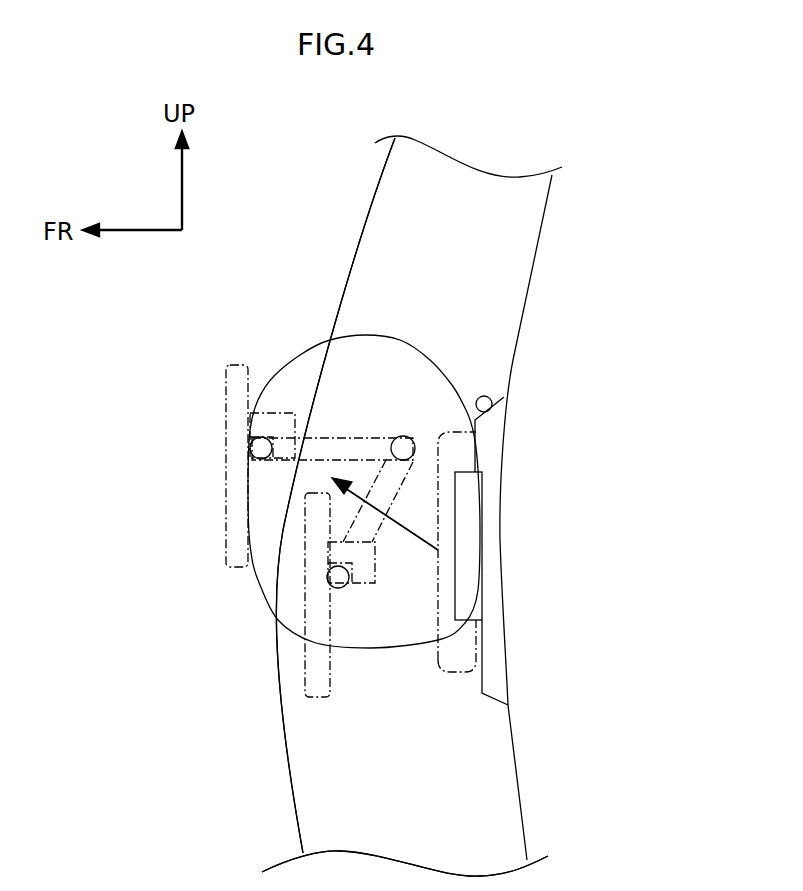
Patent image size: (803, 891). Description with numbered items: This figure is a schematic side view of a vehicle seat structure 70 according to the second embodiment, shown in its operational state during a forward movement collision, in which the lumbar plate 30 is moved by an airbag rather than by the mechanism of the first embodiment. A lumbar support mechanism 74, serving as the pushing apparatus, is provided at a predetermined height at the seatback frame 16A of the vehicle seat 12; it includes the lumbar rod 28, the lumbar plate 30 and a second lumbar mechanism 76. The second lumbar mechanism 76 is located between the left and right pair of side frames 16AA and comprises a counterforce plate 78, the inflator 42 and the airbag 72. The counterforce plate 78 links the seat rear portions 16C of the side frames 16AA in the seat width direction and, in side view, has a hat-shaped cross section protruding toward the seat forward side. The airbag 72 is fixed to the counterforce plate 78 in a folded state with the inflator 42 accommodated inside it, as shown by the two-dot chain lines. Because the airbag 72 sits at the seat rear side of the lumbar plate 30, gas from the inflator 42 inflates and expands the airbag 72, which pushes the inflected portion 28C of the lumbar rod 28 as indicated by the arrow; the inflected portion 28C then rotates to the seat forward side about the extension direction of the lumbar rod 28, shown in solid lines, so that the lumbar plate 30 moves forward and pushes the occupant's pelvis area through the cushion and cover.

The vehicle seat 12 is at (212, 813).
The seatback frame 16A is at (335, 495).
The side frames 16AA is at (508, 292).
The seat rear portions 16C is at (502, 357).
The lumbar rod 28 is at (345, 437).
The inflected portion 28C is at (258, 459).
The lumbar plate 30 is at (222, 442).
The inflator 42 is at (472, 570).
The vehicle seat structure 70 is at (265, 242).
The airbag 72 is at (382, 337).
The lumbar support mechanism 74 is at (280, 340).
The second lumbar mechanism 76 is at (474, 342).
The counterforce plate 78 is at (490, 398).